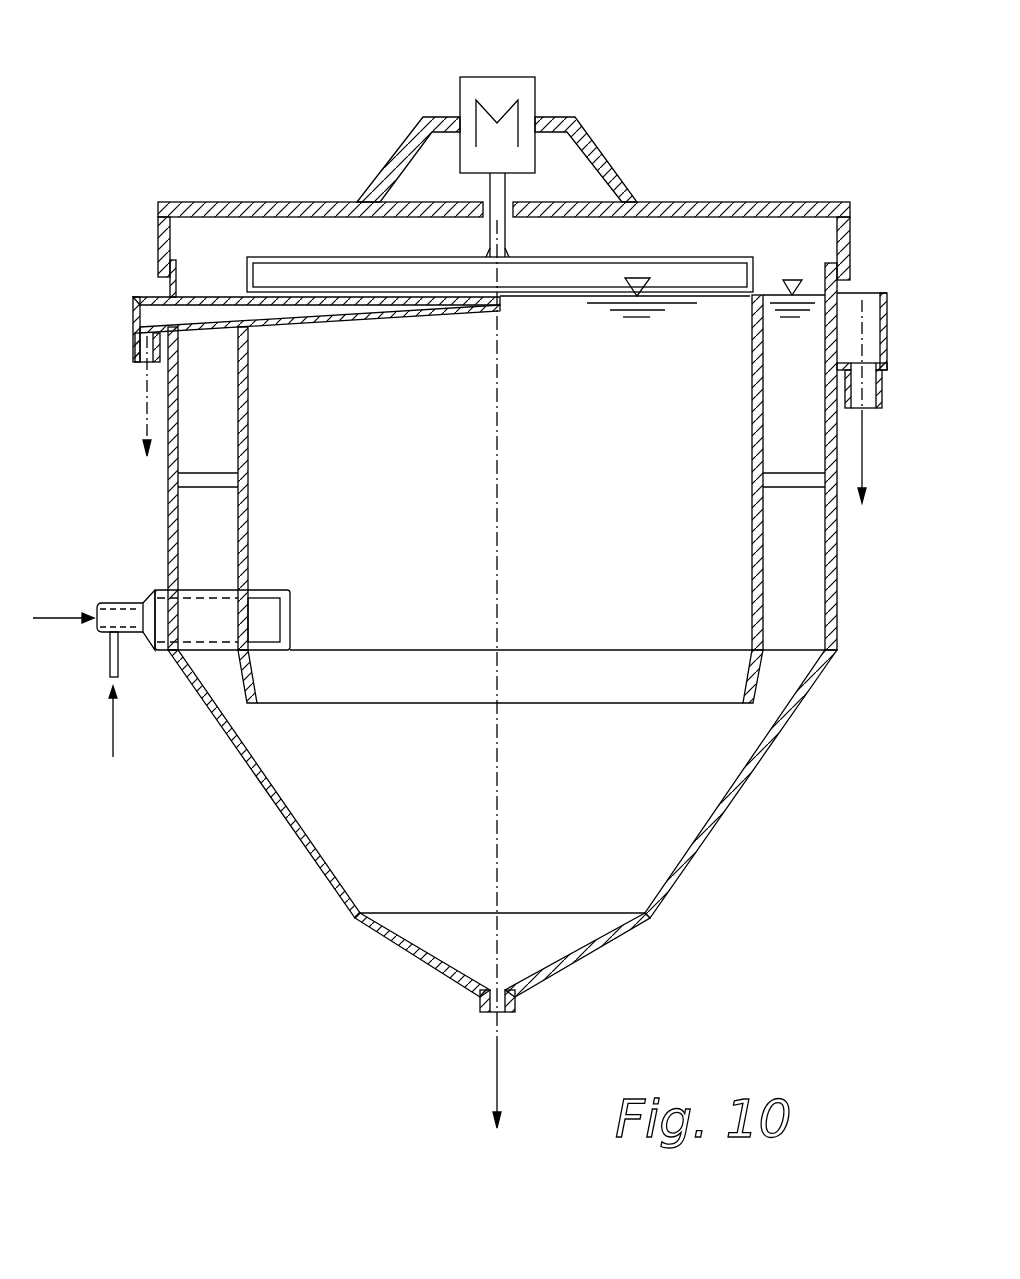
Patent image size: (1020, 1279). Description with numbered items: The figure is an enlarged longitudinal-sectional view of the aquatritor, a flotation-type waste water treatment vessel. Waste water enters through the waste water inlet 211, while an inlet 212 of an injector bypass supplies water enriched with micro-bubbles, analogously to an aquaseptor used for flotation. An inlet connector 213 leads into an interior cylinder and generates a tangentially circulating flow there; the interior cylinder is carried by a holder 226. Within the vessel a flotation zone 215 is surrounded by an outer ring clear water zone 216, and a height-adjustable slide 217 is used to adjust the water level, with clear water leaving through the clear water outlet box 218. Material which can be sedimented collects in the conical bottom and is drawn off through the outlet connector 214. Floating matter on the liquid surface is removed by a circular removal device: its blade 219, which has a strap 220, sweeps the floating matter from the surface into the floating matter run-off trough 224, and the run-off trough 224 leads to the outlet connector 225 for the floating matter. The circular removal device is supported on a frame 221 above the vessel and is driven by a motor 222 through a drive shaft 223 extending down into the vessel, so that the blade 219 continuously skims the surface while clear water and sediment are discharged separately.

The waste water inlet 211 is at (48, 616).
The inlet of injector bypass 212 is at (113, 729).
The inlet connector 213 is at (292, 612).
The outlet connector 214 is at (497, 1063).
The flotation zone 215 is at (580, 486).
The outer ring clear water zone 216 is at (817, 563).
The height-adjustable slide 217 is at (813, 357).
The clear water outlet box 218 is at (857, 324).
The blade of circular removal device 219 is at (586, 284).
The strap 220 is at (643, 257).
The frame 221 is at (678, 201).
The motor 222 is at (516, 77).
The drive shaft 223 is at (490, 230).
The floating matter run-off trough 224 is at (188, 312).
The outlet connector for floating matter 225 is at (134, 348).
The holder 226 is at (792, 472).